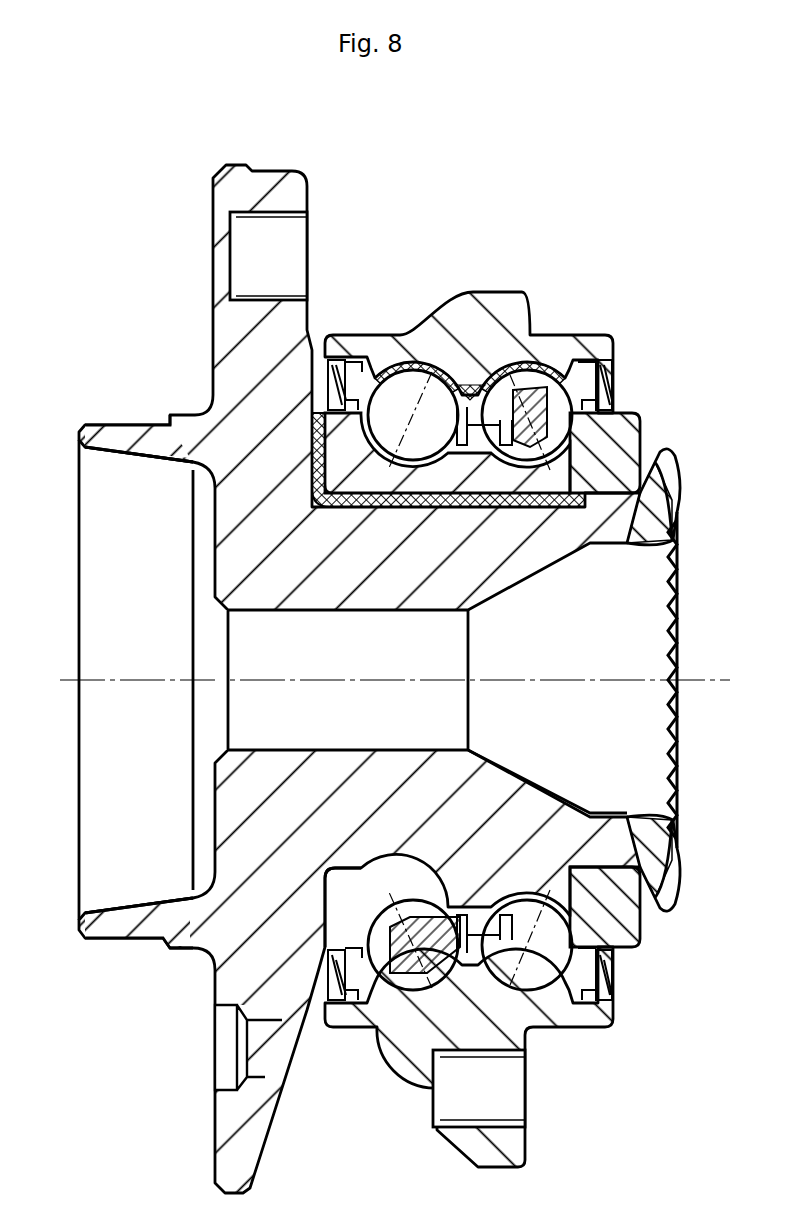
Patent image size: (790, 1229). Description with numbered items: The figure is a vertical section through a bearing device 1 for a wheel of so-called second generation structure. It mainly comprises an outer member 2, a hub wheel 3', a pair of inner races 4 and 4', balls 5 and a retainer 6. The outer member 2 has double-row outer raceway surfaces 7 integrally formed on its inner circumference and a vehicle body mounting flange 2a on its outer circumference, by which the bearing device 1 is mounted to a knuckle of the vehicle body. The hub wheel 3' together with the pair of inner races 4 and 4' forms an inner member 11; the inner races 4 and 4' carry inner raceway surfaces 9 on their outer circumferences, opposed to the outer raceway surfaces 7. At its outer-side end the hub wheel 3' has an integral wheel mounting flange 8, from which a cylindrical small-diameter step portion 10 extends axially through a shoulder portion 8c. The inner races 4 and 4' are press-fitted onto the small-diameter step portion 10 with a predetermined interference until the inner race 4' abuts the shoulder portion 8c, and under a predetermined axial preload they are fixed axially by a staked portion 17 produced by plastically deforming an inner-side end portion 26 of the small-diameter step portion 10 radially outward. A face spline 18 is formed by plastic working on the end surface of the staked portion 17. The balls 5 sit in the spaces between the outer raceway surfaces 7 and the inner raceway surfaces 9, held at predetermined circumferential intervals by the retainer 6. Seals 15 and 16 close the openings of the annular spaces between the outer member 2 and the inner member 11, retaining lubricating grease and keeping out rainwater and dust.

The bearing device for a wheel 1 is at (598, 258).
The outer member 2 is at (497, 283).
The vehicle body mounting flange 2a is at (517, 1152).
The hub wheel 3' is at (180, 719).
The inner race 4 is at (611, 645).
The inner race 4' is at (359, 679).
The balls 5 is at (400, 982).
The retainer 6 is at (482, 915).
The outer raceway surfaces 7 is at (412, 376).
The wheel mounting flange 8 is at (258, 190).
The shoulder portion 8c is at (328, 880).
The inner raceway surfaces 9 is at (410, 445).
The small-diameter step portion 10 is at (598, 830).
The inner member 11 is at (160, 475).
The seal 15 is at (328, 953).
The seal 16 is at (614, 998).
The staked portion 17 is at (647, 460).
The face spline 18 is at (677, 460).
The inner-side end portion 26 is at (650, 507).